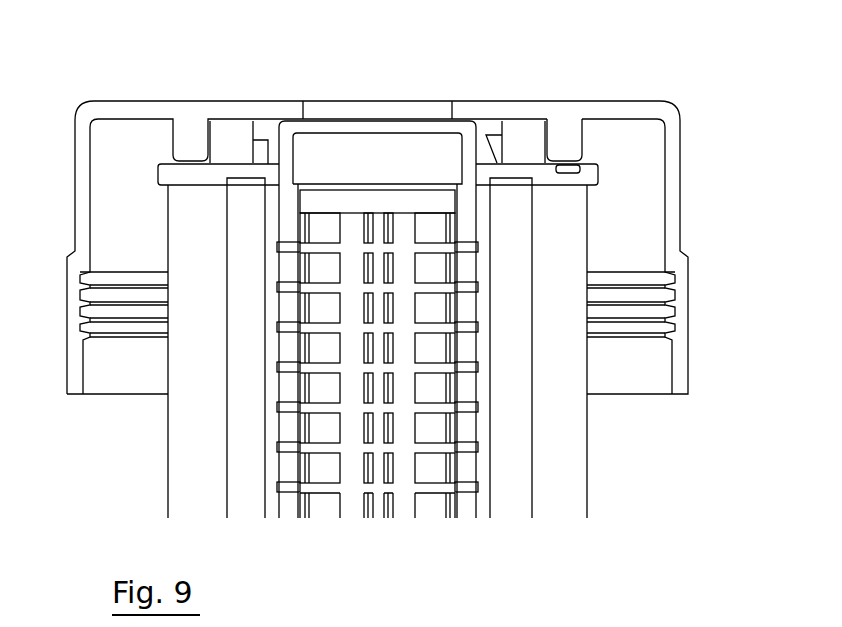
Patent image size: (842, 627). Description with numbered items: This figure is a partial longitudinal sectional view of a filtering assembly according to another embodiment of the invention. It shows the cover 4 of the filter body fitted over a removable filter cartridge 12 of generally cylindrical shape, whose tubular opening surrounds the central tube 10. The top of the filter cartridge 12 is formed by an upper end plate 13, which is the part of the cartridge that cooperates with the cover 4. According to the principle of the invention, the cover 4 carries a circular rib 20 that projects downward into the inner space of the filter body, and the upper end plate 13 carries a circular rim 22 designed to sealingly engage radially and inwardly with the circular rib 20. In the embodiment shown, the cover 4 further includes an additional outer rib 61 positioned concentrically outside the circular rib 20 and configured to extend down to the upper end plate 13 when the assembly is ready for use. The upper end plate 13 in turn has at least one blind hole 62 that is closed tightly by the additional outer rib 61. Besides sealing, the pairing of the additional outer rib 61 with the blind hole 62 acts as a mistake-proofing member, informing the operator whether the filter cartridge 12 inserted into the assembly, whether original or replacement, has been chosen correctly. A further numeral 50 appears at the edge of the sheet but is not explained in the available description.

The cover 4 is at (678, 190).
The tube 10 is at (288, 164).
The filter cartridge 12 is at (560, 447).
The upper end plate 13 is at (530, 178).
The circular rib 20 is at (495, 133).
The circular rim 22 is at (273, 152).
The housing 50 is at (588, 620).
The additional outer rib 61 is at (565, 143).
The blind hole 62 is at (583, 166).